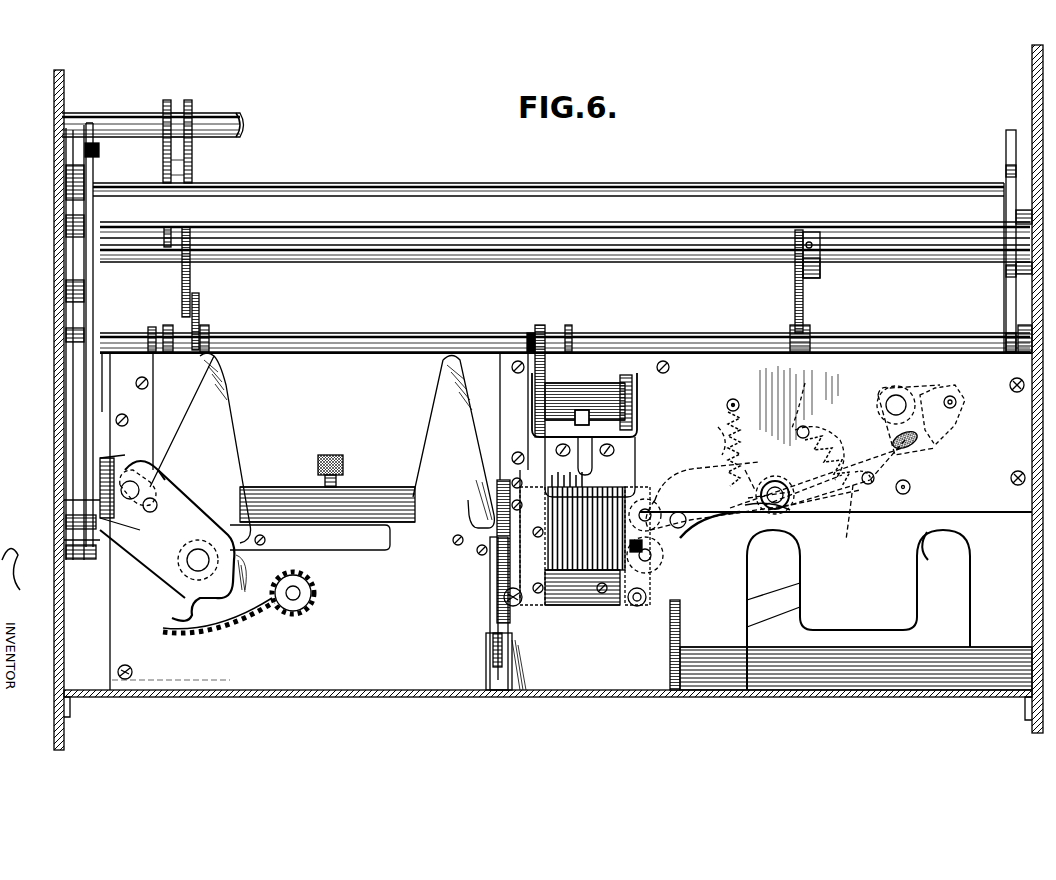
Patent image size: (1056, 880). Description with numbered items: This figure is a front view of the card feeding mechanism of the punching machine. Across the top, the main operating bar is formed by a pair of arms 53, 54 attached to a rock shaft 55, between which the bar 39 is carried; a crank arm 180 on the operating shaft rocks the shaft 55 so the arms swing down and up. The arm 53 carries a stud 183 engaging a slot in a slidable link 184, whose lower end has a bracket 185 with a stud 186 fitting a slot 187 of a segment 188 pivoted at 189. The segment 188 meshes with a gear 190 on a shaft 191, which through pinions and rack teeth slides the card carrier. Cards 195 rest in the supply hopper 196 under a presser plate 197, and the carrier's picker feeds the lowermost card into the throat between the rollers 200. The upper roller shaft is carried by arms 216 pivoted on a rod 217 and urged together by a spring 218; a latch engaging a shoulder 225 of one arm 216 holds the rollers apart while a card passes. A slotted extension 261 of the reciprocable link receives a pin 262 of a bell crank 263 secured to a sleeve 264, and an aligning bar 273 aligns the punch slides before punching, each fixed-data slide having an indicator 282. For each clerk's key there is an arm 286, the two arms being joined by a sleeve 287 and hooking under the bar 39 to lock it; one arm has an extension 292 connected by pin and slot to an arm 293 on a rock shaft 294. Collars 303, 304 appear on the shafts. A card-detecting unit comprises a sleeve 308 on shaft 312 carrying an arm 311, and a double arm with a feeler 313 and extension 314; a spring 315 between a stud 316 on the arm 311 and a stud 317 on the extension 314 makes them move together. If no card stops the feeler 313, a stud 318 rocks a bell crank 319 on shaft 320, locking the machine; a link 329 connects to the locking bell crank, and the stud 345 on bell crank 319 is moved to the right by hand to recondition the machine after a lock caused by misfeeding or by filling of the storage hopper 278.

The bar 39 is at (314, 192).
The arm 53 is at (64, 304).
The arm 54 is at (1005, 306).
The rock shaft 55 is at (300, 248).
The crank arm 180 is at (803, 297).
The stud 183 is at (97, 151).
The link 184 is at (90, 320).
The bracket 185 is at (108, 468).
The stud 186 is at (150, 472).
The slot 187 is at (133, 511).
The segment 188 is at (183, 519).
The pivot 189 is at (196, 561).
The gear 190 is at (316, 603).
The shaft 191 is at (294, 592).
The cards 195 is at (372, 512).
The supply hopper 196 is at (322, 448).
The presser plate 197 is at (272, 487).
The rollers 200 is at (670, 557).
The arms 216 is at (718, 516).
The rod 217 is at (686, 522).
The spring 218 is at (742, 440).
The shoulder 225 is at (704, 436).
The extension 261 is at (540, 325).
The pin 262 is at (528, 343).
The bell crank 263 is at (560, 342).
The sleeve 264 is at (582, 390).
The aligning bar 273 is at (628, 457).
The storage hopper 278 is at (858, 610).
The indicator 282 is at (566, 488).
The arm 286 is at (188, 100).
The sleeve 287 is at (180, 125).
The extension 292 is at (191, 268).
The arm 293 is at (199, 322).
The rock shaft 294 is at (285, 338).
The collar 303 is at (148, 338).
The collar 304 is at (167, 325).
The sleeve 308 is at (770, 482).
The arm 311 is at (813, 399).
The shaft 312 is at (782, 505).
The feeler 313 is at (700, 472).
The extension 314 is at (846, 522).
The spring 315 is at (826, 448).
The stud 316 is at (808, 428).
The stud 317 is at (870, 485).
The stud 318 is at (955, 406).
The bell crank 319 is at (940, 388).
The shaft 320 is at (897, 398).
The link 329 is at (928, 556).
The stud 345 is at (910, 444).